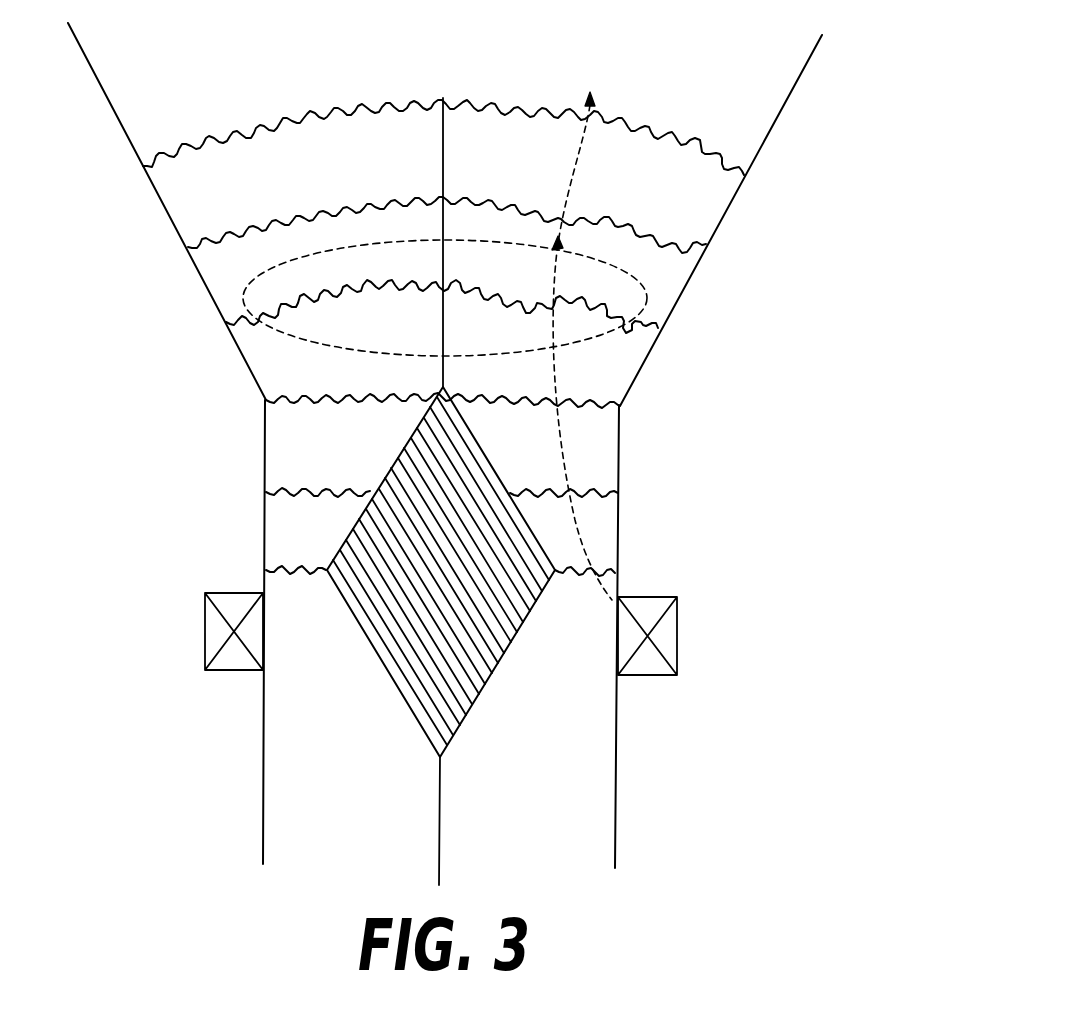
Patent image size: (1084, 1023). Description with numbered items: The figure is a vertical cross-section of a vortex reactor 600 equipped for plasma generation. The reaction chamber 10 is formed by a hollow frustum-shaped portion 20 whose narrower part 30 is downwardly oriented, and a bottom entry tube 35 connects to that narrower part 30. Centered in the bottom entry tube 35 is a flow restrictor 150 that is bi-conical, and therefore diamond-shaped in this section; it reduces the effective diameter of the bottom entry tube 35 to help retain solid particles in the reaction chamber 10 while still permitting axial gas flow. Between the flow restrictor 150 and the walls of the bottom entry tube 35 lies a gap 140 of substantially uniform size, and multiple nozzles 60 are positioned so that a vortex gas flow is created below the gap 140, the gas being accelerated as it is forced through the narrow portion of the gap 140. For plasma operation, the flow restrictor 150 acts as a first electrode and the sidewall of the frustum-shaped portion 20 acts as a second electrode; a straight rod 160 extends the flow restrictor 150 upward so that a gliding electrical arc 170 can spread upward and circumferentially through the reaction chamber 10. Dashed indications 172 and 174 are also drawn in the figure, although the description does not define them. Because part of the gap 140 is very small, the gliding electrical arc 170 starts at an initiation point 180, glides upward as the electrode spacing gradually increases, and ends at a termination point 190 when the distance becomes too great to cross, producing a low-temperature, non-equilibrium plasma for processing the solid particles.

The reaction chamber 10 is at (147, 105).
The frustum-shaped portion 20 is at (708, 244).
The narrower part 30 is at (620, 406).
The bottom entry tube 35 is at (615, 808).
The nozzles 60 is at (213, 672).
The gap 140 is at (300, 582).
The flow restrictor 150 is at (398, 700).
The straight rod 160 is at (447, 157).
The gliding electrical arc 170 is at (251, 131).
The flow path 172 is at (592, 165).
The circulation path 174 is at (283, 337).
The initiation point 180 is at (620, 573).
The termination point 190 is at (746, 176).
The vortex reactor 600 is at (826, 62).